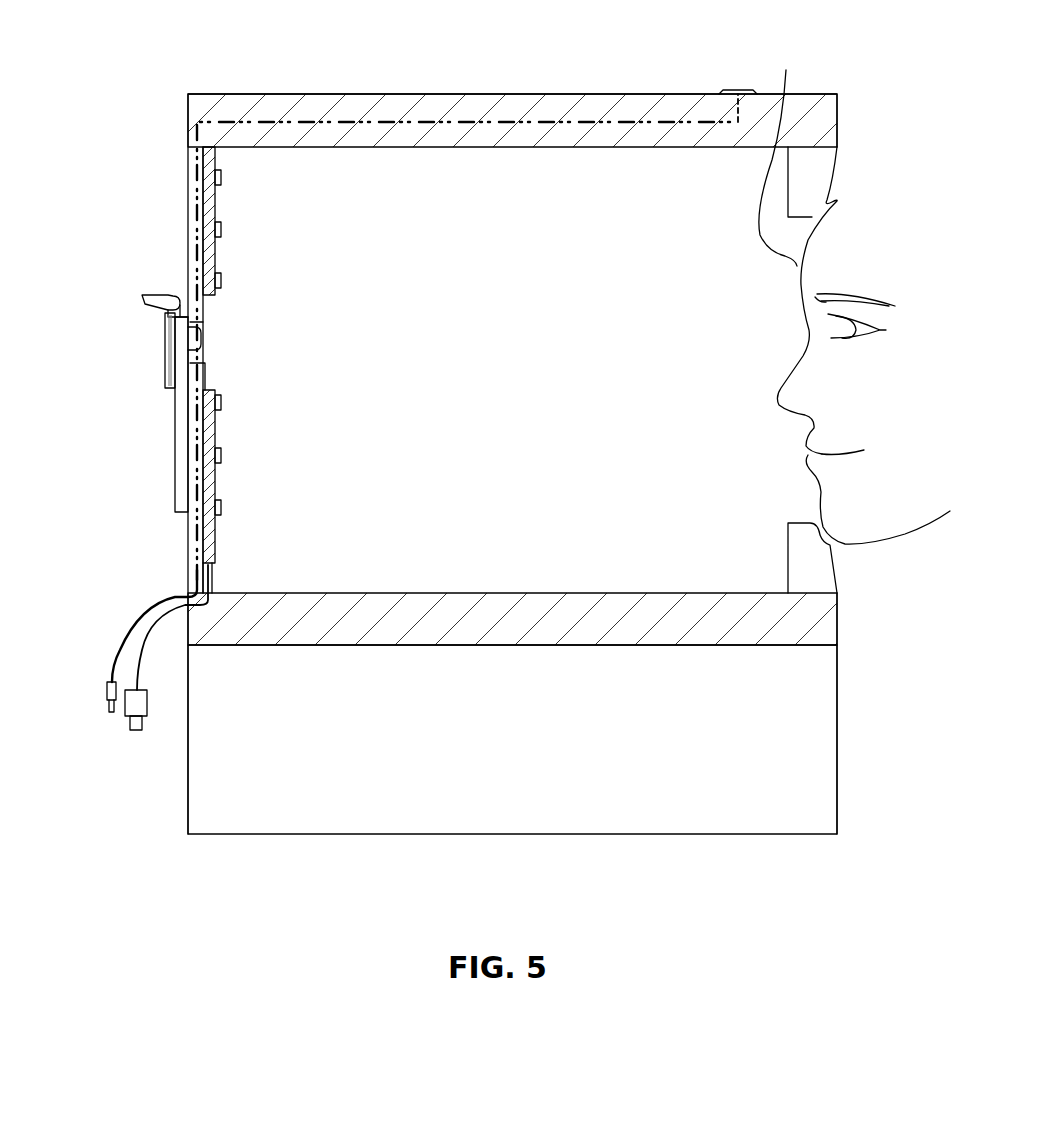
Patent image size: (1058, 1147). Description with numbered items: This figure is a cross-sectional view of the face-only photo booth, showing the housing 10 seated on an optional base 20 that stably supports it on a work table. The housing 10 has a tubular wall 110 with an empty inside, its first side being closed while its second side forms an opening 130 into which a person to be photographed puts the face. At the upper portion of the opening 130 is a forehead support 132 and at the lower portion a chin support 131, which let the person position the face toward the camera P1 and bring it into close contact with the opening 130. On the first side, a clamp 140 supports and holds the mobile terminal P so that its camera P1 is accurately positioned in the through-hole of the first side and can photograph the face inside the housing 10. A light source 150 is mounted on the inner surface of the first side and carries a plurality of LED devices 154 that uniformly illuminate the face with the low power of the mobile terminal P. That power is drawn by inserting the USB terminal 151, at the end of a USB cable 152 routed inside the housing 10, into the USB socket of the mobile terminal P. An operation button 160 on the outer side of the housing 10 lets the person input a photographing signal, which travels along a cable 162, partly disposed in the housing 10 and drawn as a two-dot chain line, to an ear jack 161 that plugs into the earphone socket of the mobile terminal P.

The housing 10 is at (336, 86).
The base 20 is at (582, 804).
The wall 110 is at (577, 104).
The opening 130 is at (854, 294).
The chin support 131 is at (820, 566).
The forehead support 132 is at (824, 172).
The clamp 140 is at (170, 346).
The light source 150 is at (208, 205).
The USB terminal 151 is at (137, 722).
The USB cable 152 is at (135, 640).
The LED devices 154 is at (221, 402).
The operation button 160 is at (735, 90).
The ear jack 161 is at (107, 688).
The cable 162 is at (440, 118).
The mobile terminal P is at (163, 431).
The camera P1 is at (197, 333).